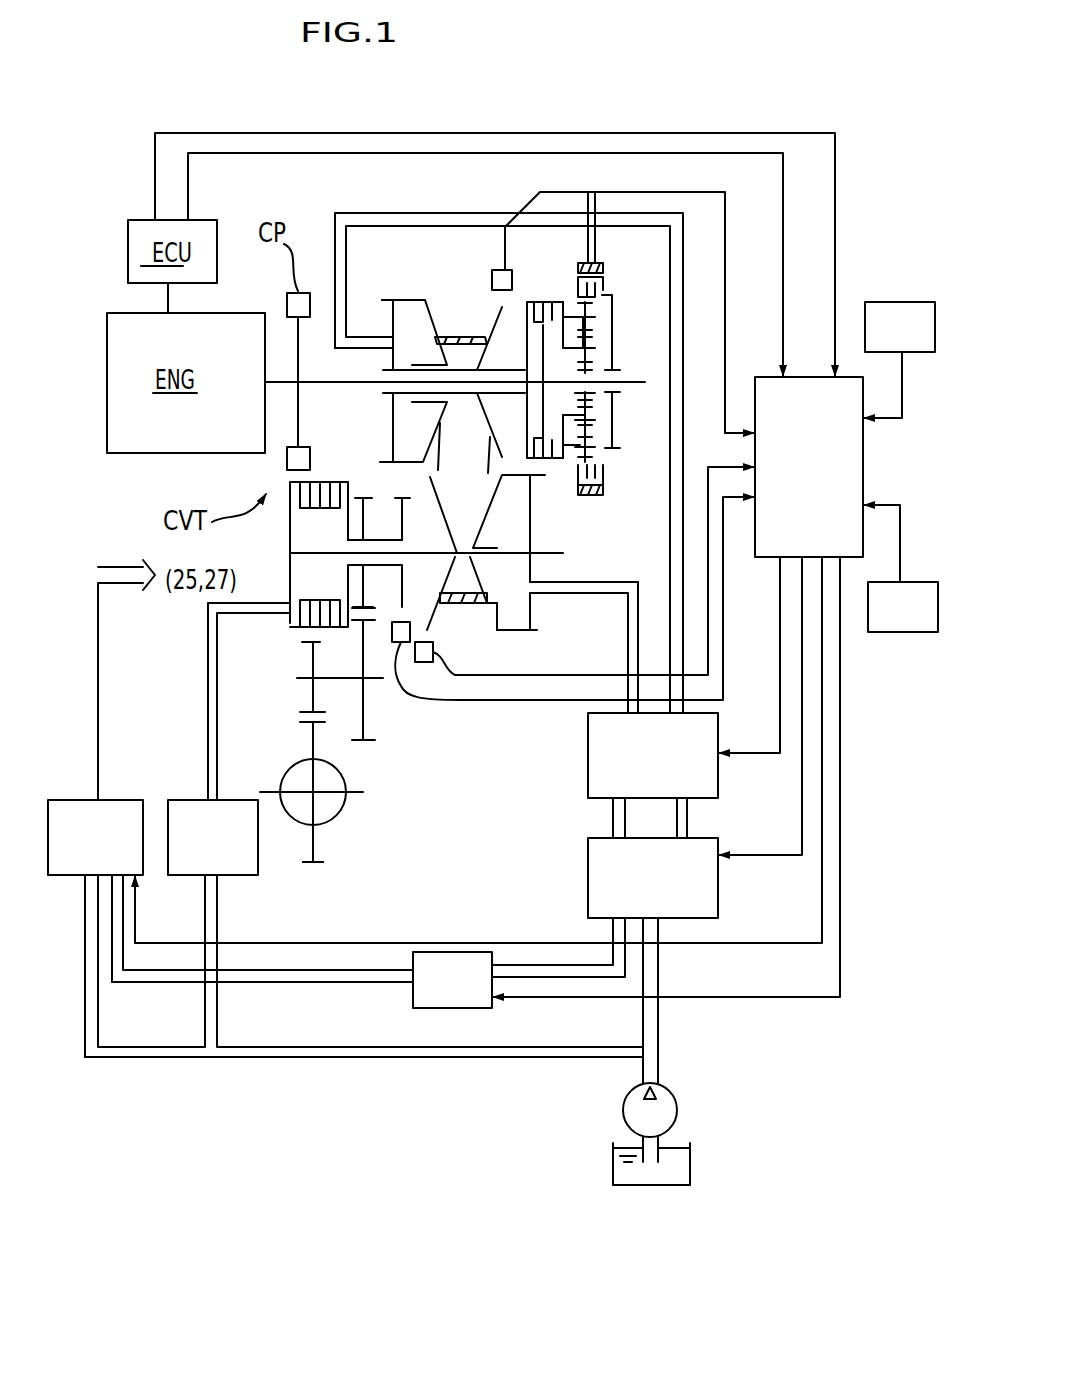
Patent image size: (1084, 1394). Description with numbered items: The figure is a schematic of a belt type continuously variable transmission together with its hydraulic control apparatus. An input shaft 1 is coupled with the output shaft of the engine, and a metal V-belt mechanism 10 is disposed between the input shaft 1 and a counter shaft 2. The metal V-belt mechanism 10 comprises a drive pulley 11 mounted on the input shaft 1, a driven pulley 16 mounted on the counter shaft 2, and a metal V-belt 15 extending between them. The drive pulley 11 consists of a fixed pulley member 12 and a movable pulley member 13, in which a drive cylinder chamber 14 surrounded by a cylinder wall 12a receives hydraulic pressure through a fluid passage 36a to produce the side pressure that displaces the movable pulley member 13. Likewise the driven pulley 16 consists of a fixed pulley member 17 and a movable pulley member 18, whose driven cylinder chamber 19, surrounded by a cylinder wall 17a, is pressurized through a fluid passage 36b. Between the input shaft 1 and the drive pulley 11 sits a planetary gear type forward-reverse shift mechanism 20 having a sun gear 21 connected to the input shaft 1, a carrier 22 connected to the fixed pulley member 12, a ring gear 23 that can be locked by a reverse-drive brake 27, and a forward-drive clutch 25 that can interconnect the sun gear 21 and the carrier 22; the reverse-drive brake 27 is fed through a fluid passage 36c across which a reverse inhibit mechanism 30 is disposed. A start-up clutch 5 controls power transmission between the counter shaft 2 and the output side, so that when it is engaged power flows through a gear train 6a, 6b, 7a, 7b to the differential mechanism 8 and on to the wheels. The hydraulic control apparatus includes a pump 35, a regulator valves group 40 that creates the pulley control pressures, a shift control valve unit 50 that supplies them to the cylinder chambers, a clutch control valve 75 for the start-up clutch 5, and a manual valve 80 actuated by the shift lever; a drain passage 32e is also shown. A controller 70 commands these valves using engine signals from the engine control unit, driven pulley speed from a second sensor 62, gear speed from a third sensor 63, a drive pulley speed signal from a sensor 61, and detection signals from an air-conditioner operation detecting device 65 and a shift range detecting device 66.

The input shaft 1 is at (333, 386).
The counter shaft 2 is at (412, 557).
The start-up clutch 5 is at (327, 478).
The gear 6a is at (368, 488).
The gear 6b is at (365, 742).
The gear train member 7a is at (307, 641).
The gear train member 7b is at (320, 864).
The differential mechanism 8 is at (343, 800).
The metal V-belt mechanism 10 is at (542, 497).
The drive pulley 11 is at (432, 286).
The fixed pulley member 12 is at (502, 321).
The cylinder wall 12a is at (393, 351).
The movable pulley member 13 is at (403, 291).
The drive cylinder chamber 14 is at (426, 347).
The metal V-belt 15 is at (478, 471).
The driven pulley 16 is at (548, 636).
The fixed pulley member 17 is at (447, 531).
The cylinder wall 17a is at (532, 604).
The movable pulley member 18 is at (488, 616).
The driven cylinder chamber 19 is at (518, 541).
The planetary gear type forward-reverse shift mechanism 20 is at (625, 278).
The sun gear 21 is at (596, 370).
The carrier 22 is at (588, 405).
The ring gear 23 is at (604, 456).
The forward-drive clutch 25 is at (543, 300).
The reverse-drive brake 27 is at (604, 285).
The reverse inhibit mechanism 30 is at (462, 993).
The drain passage 32e is at (150, 1059).
The pump 35 is at (674, 1084).
The fluid passage 36a is at (425, 213).
The fluid passage 36b is at (638, 582).
The fluid passage 36c is at (313, 984).
The regulator valves group 40 is at (666, 893).
The shift control valve unit 50 is at (666, 773).
The primary pulley speed sensor 61 is at (492, 280).
The second sensor 62 is at (453, 677).
The third sensor 63 is at (571, 611).
The air-conditioner operation detecting device 65 is at (903, 300).
The shift range detecting device 66 is at (900, 633).
The controller 70 is at (818, 485).
The clutch control valve 75 is at (222, 856).
The manual valve 80 is at (100, 856).